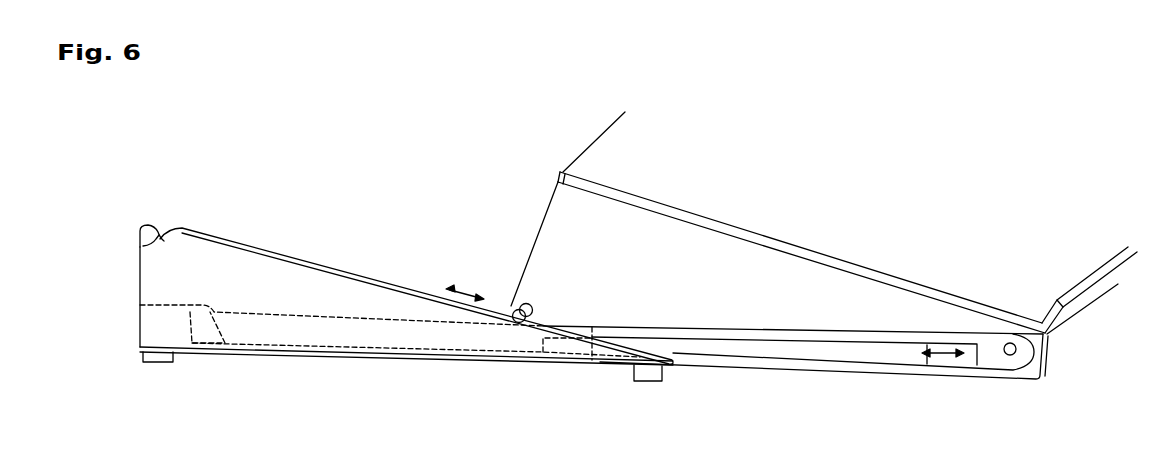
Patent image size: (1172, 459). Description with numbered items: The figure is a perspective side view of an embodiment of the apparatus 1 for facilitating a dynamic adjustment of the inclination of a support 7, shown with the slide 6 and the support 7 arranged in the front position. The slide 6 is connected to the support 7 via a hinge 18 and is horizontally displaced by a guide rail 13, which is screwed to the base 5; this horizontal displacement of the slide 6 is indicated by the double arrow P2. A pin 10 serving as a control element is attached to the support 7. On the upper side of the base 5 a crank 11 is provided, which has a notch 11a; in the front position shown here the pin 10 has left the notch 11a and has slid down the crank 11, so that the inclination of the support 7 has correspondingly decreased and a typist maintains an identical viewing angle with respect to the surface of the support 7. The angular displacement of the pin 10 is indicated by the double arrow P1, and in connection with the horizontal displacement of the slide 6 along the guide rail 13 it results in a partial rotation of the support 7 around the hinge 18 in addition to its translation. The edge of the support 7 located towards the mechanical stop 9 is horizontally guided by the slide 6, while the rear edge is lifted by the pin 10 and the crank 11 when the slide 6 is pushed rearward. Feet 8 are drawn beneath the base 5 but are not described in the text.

The apparatus 1 is at (995, 112).
The base 5 is at (163, 337).
The slide 6 is at (783, 337).
The support 7 is at (690, 175).
The bearing foot 8 is at (177, 359).
The mechanical stop 9 is at (1083, 296).
The pin 10 is at (513, 305).
The crank 11 is at (237, 242).
The notch 11a is at (138, 243).
The guide rail 13 is at (140, 306).
The hinge 18 is at (1016, 348).
The double arrow P1 is at (467, 290).
The double arrow P2 is at (943, 358).